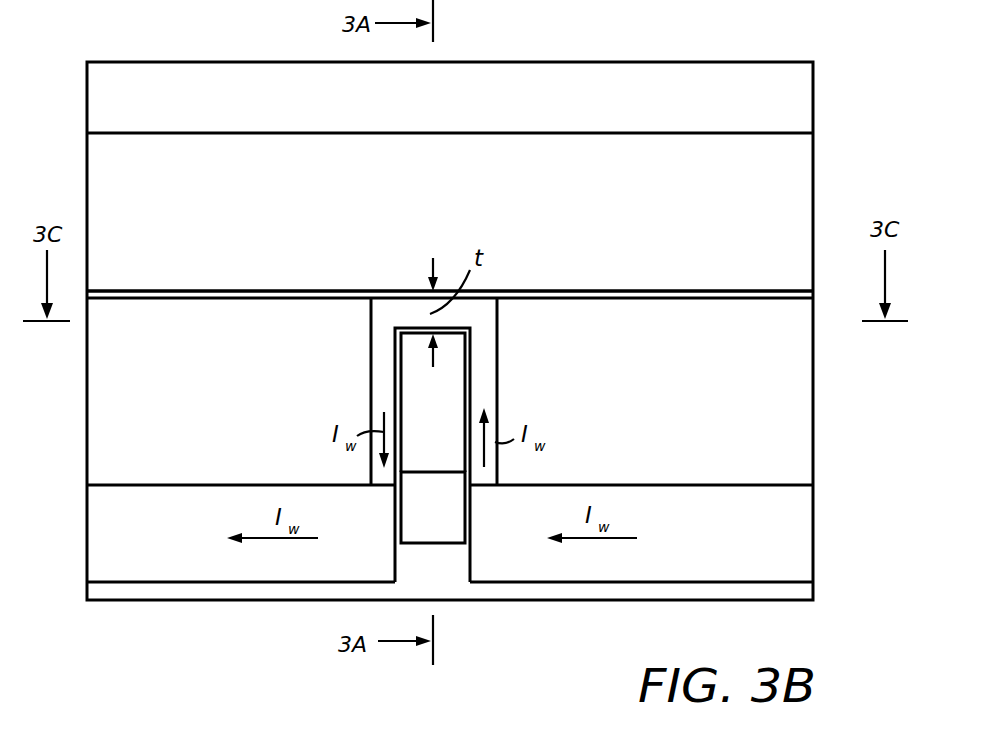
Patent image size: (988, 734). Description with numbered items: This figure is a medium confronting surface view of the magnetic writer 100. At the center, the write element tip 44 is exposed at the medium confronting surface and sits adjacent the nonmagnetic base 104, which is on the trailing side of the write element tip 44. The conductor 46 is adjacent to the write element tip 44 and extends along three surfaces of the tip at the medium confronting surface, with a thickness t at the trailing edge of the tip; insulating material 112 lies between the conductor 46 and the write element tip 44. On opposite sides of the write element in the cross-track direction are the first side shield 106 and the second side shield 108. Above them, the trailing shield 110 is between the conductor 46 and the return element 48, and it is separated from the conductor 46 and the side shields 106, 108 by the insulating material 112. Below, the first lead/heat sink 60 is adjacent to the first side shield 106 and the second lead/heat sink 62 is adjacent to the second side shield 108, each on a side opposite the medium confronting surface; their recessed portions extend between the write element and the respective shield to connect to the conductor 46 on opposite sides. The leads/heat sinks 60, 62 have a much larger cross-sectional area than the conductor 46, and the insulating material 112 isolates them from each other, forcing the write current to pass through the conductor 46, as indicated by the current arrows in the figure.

The magnetic writer 100 is at (847, 104).
The return element 48 is at (452, 109).
The trailing shield 110 is at (456, 217).
The insulating material 112 is at (600, 290).
The second side shield 108 is at (249, 396).
The first side shield 106 is at (675, 397).
The conductor 46 is at (408, 307).
The write element tip 44 is at (449, 416).
The nonmagnetic base 104 is at (452, 517).
The second lead/heat sink 62 is at (150, 544).
The first lead/heat sink 60 is at (743, 544).